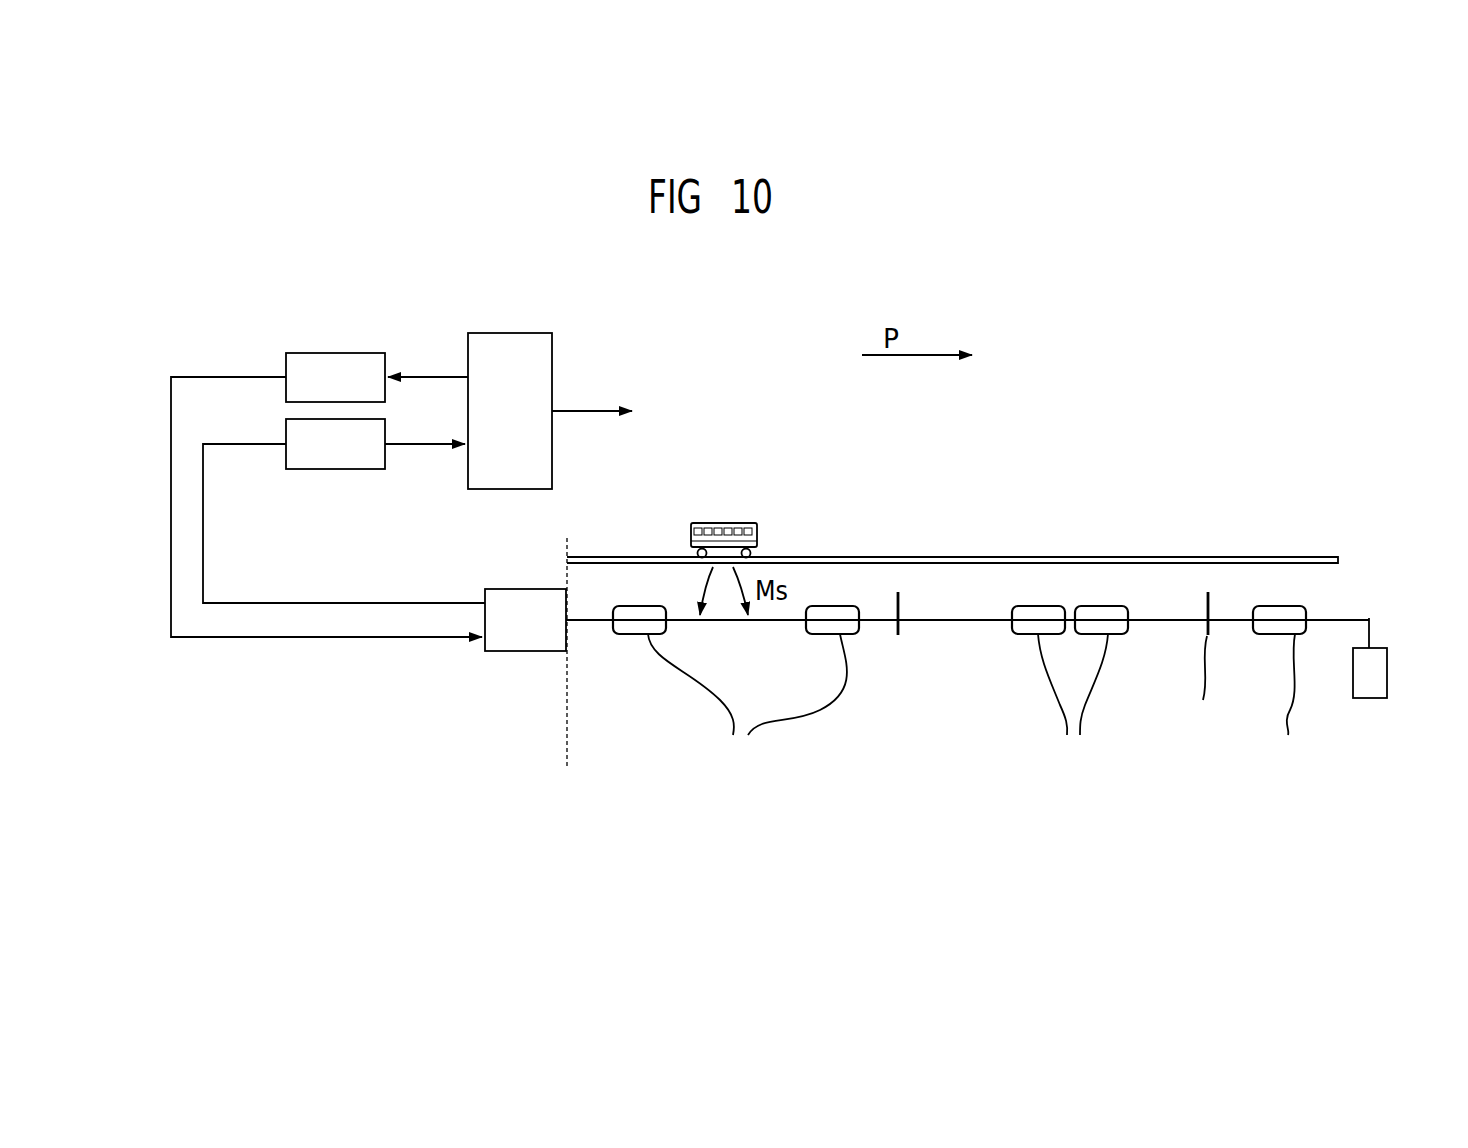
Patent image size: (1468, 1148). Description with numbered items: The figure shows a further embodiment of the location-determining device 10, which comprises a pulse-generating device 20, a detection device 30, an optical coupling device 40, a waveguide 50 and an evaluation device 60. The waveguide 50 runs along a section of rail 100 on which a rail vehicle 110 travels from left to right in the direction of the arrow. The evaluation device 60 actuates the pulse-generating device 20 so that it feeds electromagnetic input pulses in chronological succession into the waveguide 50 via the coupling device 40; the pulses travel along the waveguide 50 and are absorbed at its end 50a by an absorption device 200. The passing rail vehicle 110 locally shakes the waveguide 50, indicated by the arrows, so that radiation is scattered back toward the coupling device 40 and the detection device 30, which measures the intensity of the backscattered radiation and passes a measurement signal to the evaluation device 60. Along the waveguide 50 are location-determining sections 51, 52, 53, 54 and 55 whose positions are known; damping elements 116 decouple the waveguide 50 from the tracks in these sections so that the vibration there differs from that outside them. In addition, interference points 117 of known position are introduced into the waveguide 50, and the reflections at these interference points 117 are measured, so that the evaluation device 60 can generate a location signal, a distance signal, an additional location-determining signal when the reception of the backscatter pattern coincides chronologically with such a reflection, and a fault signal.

The location-determining device 10 is at (252, 357).
The pulse-generating device 20 is at (336, 352).
The detection device 30 is at (338, 470).
The optical coupling device 40 is at (522, 652).
The waveguide 50 is at (925, 621).
The end of the waveguide 50a is at (1372, 640).
The location-determining section 51 is at (626, 634).
The location-determining section 52 is at (819, 634).
The location-determining section 53 is at (1025, 634).
The location-determining section 54 is at (1088, 634).
The location-determining section 55 is at (1266, 634).
The evaluation device 60 is at (512, 332).
The section of rail 100 is at (1157, 556).
The rail vehicle 110 is at (722, 521).
The damping element 116 is at (976, 702).
The interference point 117 is at (897, 636).
The absorption device 200 is at (1373, 699).